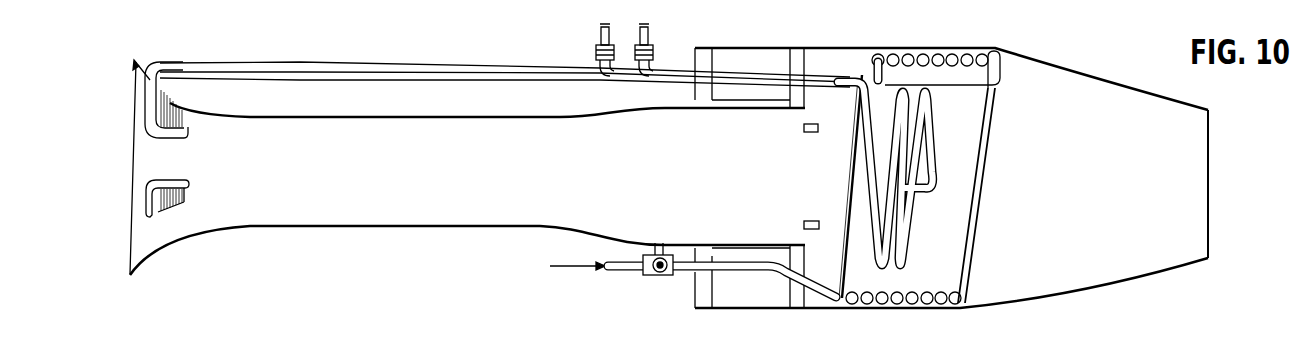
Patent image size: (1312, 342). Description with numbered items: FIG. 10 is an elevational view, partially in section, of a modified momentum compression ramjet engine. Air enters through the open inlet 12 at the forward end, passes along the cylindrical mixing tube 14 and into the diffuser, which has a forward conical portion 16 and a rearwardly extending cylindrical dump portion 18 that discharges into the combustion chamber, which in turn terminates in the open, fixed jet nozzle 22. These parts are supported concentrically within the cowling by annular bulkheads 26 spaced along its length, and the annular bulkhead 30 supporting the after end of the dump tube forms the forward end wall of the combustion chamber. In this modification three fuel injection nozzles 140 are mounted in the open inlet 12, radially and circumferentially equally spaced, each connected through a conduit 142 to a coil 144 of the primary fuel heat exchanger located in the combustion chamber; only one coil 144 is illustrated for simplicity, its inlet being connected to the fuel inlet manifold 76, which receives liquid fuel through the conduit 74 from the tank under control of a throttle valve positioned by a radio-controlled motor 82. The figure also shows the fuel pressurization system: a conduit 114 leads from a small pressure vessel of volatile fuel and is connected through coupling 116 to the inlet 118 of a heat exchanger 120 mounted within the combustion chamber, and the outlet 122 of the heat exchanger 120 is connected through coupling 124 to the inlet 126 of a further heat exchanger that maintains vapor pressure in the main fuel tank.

The open inlet 12 is at (177, 217).
The cylindrical mixing tube 14 is at (338, 217).
The forward conical portion 16 is at (602, 220).
The dump portion 18 is at (733, 210).
The jet nozzle 22 is at (1192, 120).
The annular bulkheads 26 is at (702, 290).
The annular bulkhead 30 is at (783, 58).
The conduit 74 is at (618, 270).
The manifold 76 is at (639, 268).
The radio-controlled motor 82 is at (880, 308).
The conduit 114 is at (599, 32).
The coupling 116 is at (596, 52).
The inlet 118 is at (603, 83).
The heat exchanger 120 is at (915, 221).
The outlet 122 is at (652, 68).
The coupling 124 is at (655, 50).
The inlet 126 is at (641, 32).
The fuel injection nozzles 140 is at (188, 133).
The conduit 142 is at (311, 65).
The coil 144 is at (816, 132).